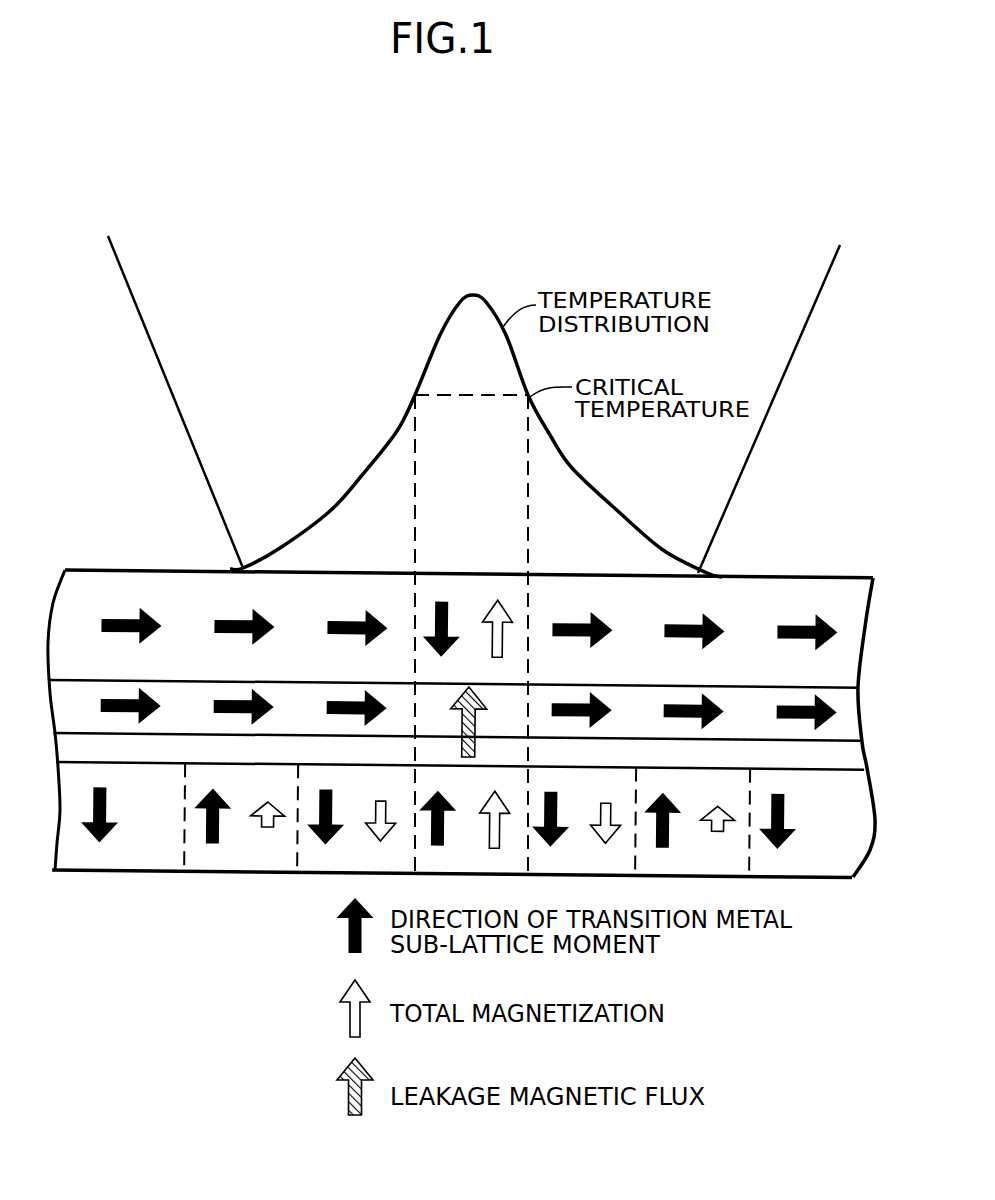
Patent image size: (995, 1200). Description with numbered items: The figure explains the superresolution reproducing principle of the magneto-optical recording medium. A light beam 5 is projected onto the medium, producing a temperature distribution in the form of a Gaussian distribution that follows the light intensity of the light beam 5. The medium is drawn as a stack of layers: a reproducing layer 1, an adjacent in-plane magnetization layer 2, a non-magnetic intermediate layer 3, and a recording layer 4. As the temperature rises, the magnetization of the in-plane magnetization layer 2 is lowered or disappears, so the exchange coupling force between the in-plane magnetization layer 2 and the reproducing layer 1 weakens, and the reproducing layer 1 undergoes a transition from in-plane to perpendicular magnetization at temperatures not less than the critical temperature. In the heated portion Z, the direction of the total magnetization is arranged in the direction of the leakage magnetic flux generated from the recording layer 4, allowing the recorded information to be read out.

The reproducing layer 1 is at (853, 637).
The in-plane magnetization layer 2 is at (853, 717).
The non-magnetic intermediate layer 3 is at (855, 757).
The recording layer 4 is at (860, 823).
The light beam 5 is at (757, 438).
The portion Z is at (488, 573).